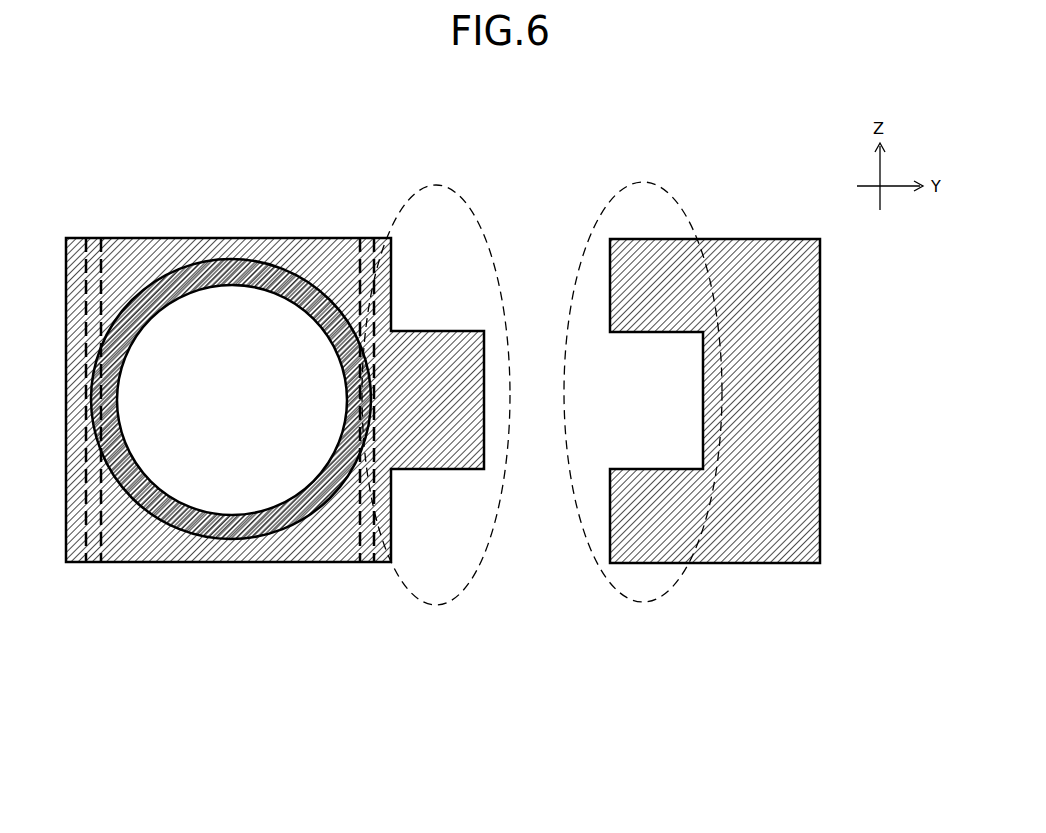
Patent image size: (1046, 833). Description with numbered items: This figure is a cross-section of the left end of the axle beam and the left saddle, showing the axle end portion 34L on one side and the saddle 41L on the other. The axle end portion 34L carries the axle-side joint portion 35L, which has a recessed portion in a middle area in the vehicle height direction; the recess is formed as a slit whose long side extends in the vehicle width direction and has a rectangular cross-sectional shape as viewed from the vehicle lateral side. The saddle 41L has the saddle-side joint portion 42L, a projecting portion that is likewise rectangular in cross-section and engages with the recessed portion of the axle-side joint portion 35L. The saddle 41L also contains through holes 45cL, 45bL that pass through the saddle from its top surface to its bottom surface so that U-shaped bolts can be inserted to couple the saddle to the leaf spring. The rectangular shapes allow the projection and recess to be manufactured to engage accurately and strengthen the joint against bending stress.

The saddle 41L is at (135, 563).
The through hole 45cL is at (98, 240).
The through hole 45bL is at (372, 238).
The saddle-side joint portion 42L is at (405, 605).
The axle end portion 34L is at (820, 424).
The axle-side joint portion 35L is at (660, 600).